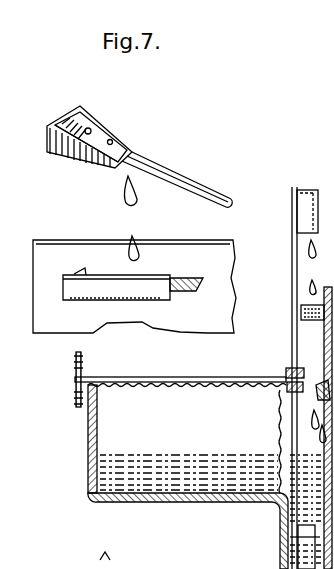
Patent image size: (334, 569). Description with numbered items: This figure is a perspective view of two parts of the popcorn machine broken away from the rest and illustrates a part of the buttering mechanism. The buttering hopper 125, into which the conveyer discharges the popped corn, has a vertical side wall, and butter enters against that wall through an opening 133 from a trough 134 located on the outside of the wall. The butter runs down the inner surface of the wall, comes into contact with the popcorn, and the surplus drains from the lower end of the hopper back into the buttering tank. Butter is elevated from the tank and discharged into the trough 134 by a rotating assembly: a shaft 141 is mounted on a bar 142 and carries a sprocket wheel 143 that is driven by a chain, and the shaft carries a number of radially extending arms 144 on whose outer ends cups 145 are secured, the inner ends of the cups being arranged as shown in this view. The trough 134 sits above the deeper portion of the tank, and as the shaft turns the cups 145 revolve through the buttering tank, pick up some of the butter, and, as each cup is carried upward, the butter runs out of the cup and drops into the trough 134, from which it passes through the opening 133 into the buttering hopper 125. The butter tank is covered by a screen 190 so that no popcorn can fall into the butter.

The buttering hopper 125 is at (134, 286).
The opening 133 is at (186, 282).
The trough 134 is at (115, 286).
The shaft 141 is at (197, 378).
The bar 142 is at (259, 441).
The sprocket wheel 143 is at (76, 385).
The radially extending arms 144 is at (204, 188).
The cups 145 is at (70, 152).
The screen 190 is at (155, 392).